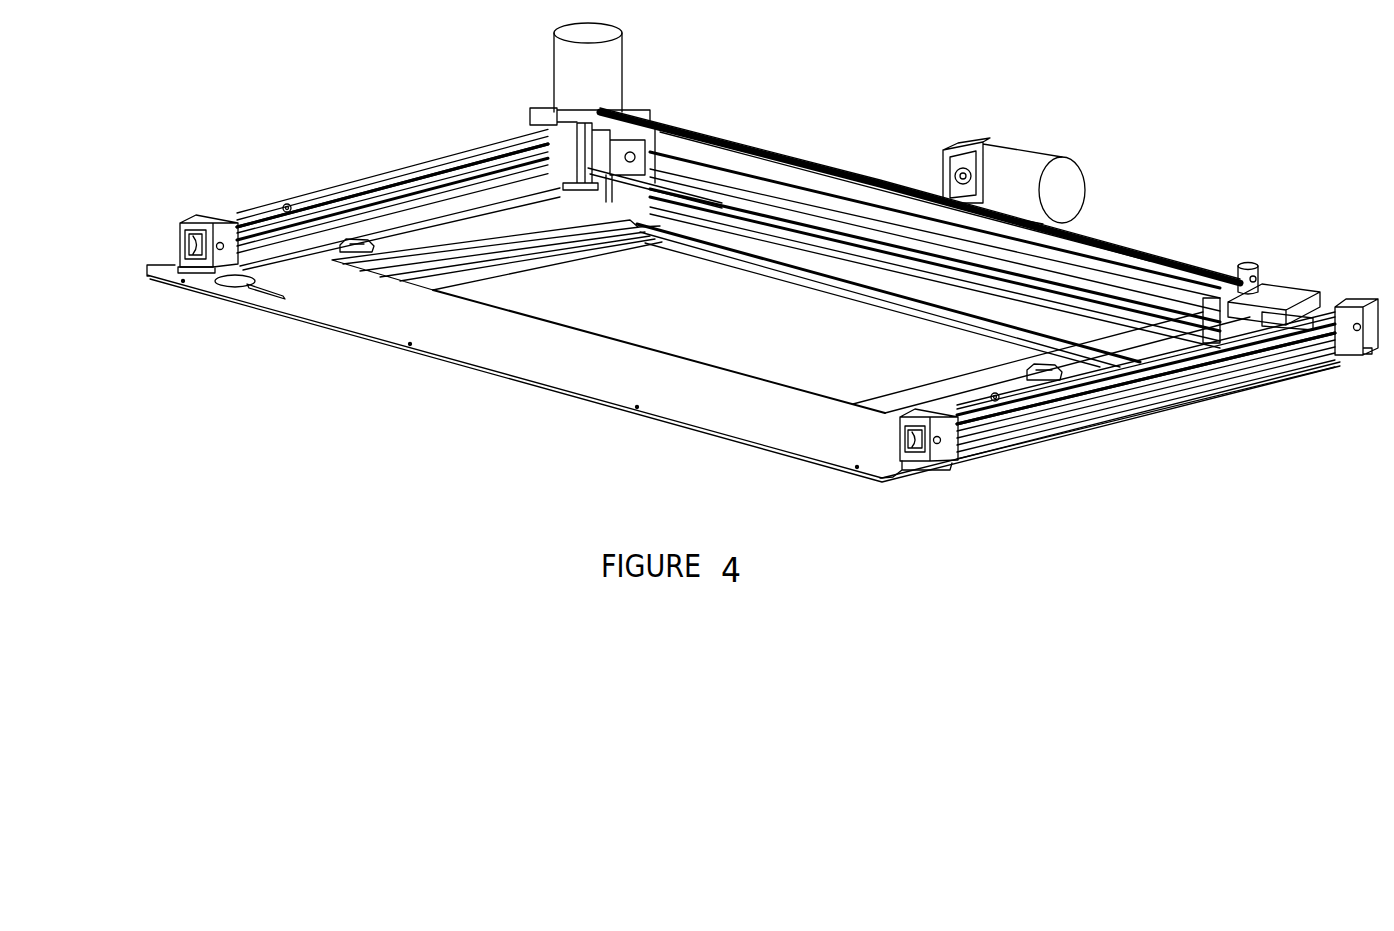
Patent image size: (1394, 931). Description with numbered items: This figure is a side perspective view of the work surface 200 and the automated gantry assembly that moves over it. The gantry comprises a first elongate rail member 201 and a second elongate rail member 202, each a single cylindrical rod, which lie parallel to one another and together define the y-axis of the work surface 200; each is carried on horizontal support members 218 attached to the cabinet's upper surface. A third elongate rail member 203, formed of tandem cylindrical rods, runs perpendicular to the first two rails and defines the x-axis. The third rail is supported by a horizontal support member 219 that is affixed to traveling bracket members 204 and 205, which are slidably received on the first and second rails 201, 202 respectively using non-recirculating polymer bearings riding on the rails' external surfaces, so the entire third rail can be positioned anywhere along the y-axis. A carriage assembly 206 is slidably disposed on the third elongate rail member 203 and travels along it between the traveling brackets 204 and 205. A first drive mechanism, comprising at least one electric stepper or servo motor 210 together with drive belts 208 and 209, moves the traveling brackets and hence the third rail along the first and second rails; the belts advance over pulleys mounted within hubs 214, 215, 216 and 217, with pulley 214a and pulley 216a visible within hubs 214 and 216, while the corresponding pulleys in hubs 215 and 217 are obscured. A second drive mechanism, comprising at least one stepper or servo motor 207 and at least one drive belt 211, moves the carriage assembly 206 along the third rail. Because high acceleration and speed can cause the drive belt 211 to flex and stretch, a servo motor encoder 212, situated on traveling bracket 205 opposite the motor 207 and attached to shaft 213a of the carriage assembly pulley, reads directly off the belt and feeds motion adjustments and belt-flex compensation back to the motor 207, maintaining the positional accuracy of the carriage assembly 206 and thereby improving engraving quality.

The work surface 200 is at (592, 312).
The first elongate rail member 201 is at (373, 182).
The second elongate rail member 202 is at (1120, 365).
The third elongate rail member 203 is at (787, 175).
The traveling bracket member 204 is at (548, 127).
The traveling bracket member 205 is at (1283, 295).
The carriage assembly 206 is at (630, 110).
The stepper or servo motor 207 is at (607, 80).
The drive belt 208 is at (250, 217).
The drive belt 209 is at (980, 437).
The electric stepper or servo motor 210 is at (1023, 170).
The drive belt 211 is at (1112, 287).
The servo motor encoder 212 is at (1252, 262).
The shaft 213a is at (1280, 280).
The hub 214 is at (937, 462).
The pulley 214a is at (900, 457).
The hub 215 is at (1352, 350).
The hub 216 is at (195, 223).
The pulley 216a is at (177, 253).
The hub 217 is at (527, 130).
The horizontal support member 218 is at (269, 208).
The horizontal support member 219 is at (880, 182).